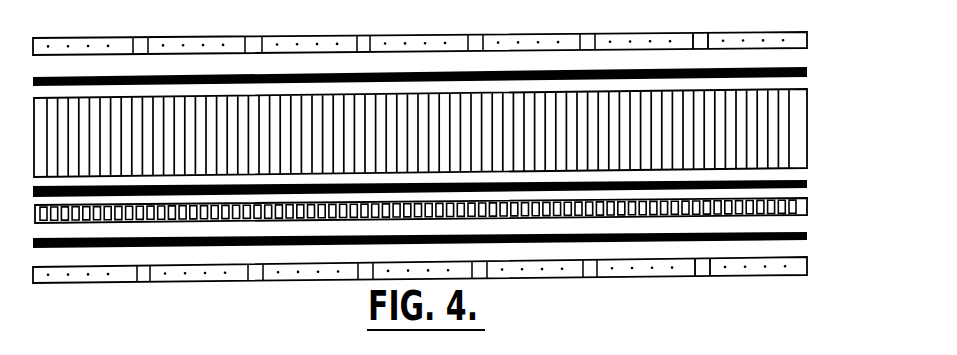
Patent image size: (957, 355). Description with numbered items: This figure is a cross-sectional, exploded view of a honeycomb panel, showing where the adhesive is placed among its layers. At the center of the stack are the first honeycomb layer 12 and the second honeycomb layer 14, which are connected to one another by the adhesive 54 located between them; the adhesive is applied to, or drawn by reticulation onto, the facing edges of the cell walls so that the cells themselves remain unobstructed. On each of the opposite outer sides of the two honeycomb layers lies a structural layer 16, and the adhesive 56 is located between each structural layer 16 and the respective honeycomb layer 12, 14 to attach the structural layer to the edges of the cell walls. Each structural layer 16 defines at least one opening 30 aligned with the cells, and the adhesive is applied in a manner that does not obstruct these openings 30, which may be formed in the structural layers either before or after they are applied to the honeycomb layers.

The first honeycomb layer 12 is at (807, 212).
The second honeycomb layer 14 is at (313, 127).
The structural layer 16 is at (807, 34).
The opening 30 is at (702, 45).
The adhesive 54 is at (807, 183).
The adhesive 56 is at (807, 68).